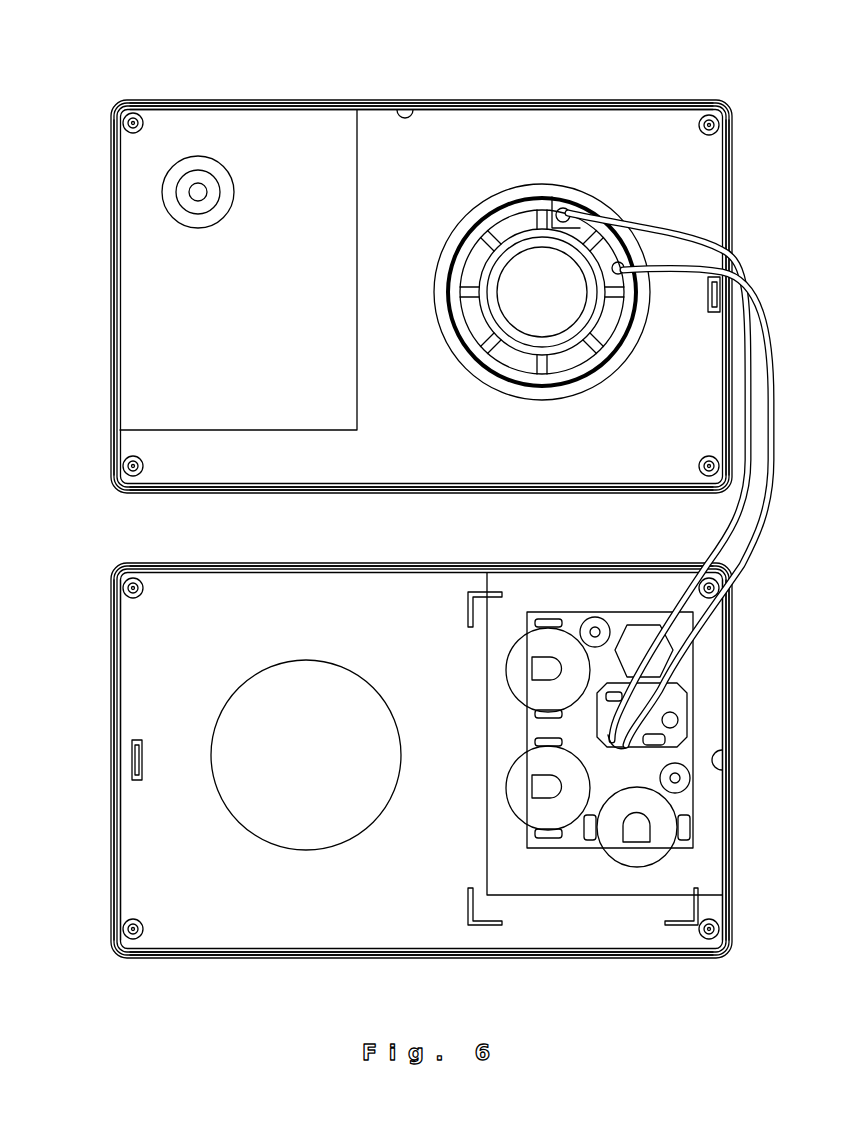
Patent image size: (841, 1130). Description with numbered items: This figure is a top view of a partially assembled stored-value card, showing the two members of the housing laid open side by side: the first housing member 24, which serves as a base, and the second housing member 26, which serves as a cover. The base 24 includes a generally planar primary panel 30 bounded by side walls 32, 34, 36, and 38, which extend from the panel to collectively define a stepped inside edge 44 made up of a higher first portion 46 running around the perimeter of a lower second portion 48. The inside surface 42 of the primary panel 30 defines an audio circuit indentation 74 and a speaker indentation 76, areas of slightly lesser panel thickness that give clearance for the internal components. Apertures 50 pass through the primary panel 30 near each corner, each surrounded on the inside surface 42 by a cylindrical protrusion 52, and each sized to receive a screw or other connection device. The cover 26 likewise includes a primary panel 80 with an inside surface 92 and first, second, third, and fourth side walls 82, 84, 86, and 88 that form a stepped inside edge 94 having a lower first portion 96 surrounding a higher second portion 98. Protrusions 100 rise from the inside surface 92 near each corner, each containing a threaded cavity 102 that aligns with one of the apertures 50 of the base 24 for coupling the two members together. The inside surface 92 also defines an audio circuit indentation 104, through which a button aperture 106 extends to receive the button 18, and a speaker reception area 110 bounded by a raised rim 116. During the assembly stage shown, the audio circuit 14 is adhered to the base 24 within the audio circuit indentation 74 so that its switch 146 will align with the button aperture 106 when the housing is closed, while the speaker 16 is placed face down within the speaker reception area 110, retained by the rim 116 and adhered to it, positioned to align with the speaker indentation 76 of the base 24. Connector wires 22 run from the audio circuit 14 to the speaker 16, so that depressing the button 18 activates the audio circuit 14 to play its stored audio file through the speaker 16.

The audio circuit 14 is at (513, 823).
The speaker 16 is at (516, 195).
The button 18 is at (170, 190).
The connector wires 22 is at (752, 499).
The first housing member 24 is at (90, 640).
The second housing member 26 is at (100, 490).
The primary panel 30 is at (262, 925).
The side wall 32 is at (613, 563).
The side wall 34 is at (735, 838).
The side wall 36 is at (598, 958).
The side wall 38 is at (115, 800).
The inside surface 42 is at (140, 868).
The inside edge 44 is at (735, 660).
The first portion 46 is at (735, 712).
The second portion 48 is at (718, 756).
The apertures 50 is at (123, 588).
The cylindrical protrusion 52 is at (120, 572).
The audio circuit indentation 74 is at (677, 890).
The speaker indentation 76 is at (215, 712).
The primary panel 80 is at (697, 205).
The first side wall 82 is at (463, 100).
The second side wall 84 is at (113, 405).
The third side wall 86 is at (470, 493).
The fourth side wall 88 is at (735, 246).
The inside surface 92 is at (335, 462).
The inside edge 94 is at (330, 100).
The first portion 96 is at (378, 100).
The second portion 98 is at (406, 103).
The protrusions 100 is at (123, 123).
The threaded cavity 102 is at (133, 112).
The audio circuit indentation 104 is at (257, 133).
The button aperture 106 is at (197, 226).
The speaker reception area 110 is at (600, 190).
The raised rim 116 is at (566, 208).
The switch 146 is at (640, 640).